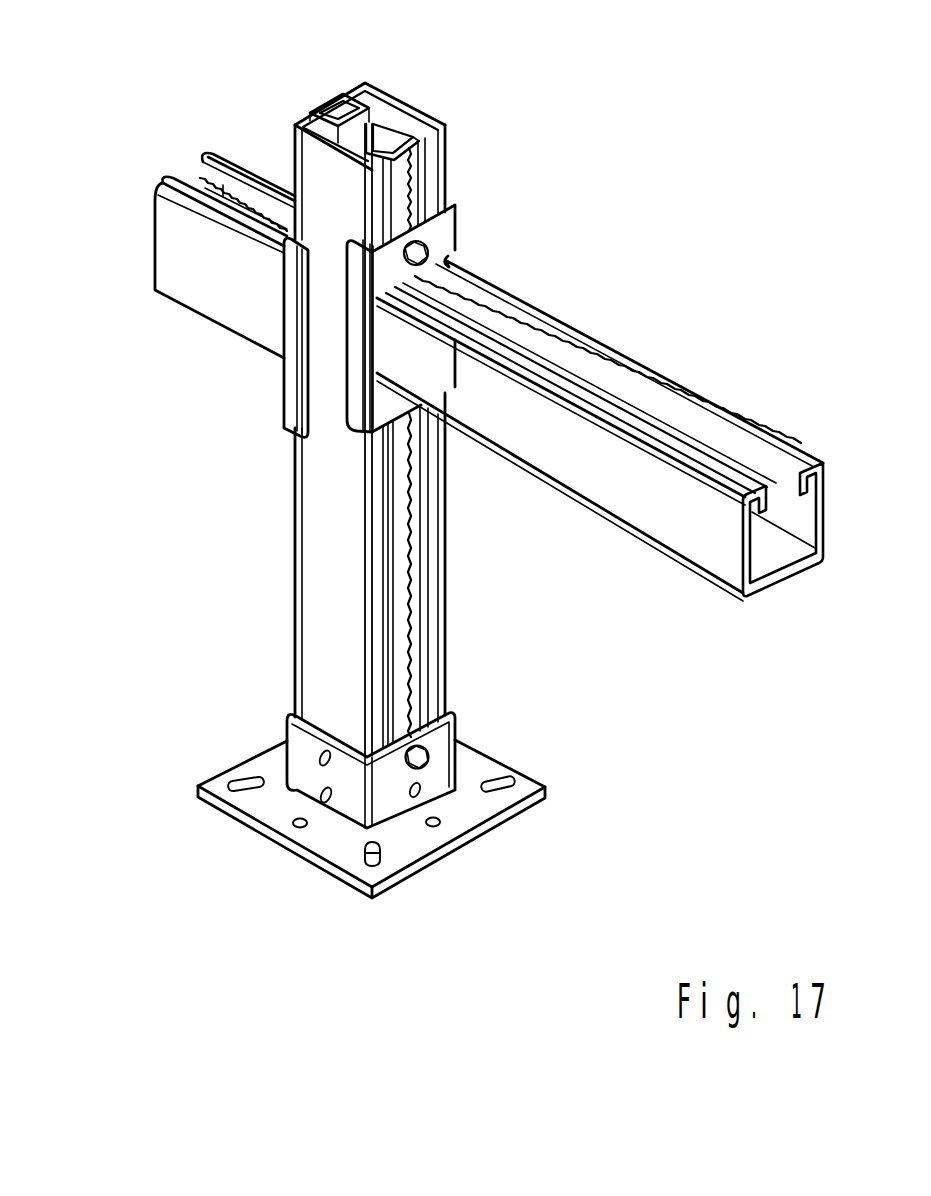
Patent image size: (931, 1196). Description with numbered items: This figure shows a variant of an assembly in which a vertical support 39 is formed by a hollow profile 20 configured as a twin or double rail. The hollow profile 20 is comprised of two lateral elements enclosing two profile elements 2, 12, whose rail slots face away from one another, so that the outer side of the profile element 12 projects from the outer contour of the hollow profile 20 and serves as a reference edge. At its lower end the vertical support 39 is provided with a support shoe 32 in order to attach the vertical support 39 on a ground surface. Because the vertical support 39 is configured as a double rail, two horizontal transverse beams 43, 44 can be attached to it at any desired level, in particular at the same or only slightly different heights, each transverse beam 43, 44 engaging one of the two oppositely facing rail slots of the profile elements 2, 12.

The profile element 2 is at (328, 114).
The hollow profile 20 is at (414, 100).
The profile element 12 is at (425, 163).
The horizontal transverse beam 43 is at (152, 249).
The horizontal transverse beam 44 is at (662, 540).
The vertical support 39 is at (303, 577).
The support shoe 32 is at (297, 752).